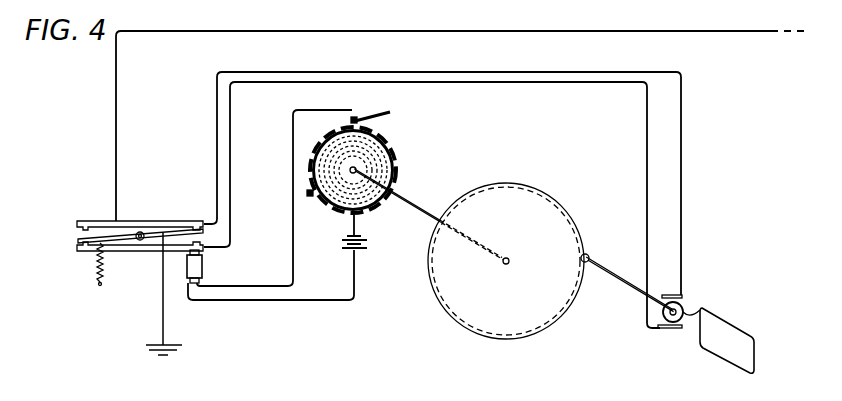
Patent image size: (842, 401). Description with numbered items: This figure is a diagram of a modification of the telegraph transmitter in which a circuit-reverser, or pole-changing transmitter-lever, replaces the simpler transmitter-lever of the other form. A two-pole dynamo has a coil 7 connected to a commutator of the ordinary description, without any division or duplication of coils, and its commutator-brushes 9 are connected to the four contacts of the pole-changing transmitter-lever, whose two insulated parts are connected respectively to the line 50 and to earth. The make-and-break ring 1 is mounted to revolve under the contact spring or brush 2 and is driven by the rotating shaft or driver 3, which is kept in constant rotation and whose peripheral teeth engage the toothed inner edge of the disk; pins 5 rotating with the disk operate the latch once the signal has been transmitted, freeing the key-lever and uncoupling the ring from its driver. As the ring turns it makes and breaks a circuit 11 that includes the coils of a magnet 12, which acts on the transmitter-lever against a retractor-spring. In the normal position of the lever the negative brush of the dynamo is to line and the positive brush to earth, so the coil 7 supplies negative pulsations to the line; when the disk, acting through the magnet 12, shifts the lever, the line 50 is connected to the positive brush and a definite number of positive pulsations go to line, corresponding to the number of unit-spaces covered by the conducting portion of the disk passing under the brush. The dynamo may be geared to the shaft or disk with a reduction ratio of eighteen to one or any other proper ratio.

The line 50 is at (460, 116).
The make-and-break ring 1 is at (385, 141).
The contact spring or brush 2 is at (391, 114).
The rotating shaft or driver 3 is at (394, 187).
The pins 5 is at (351, 120).
The generator coil 7 is at (758, 356).
The commutator-brushes 9 is at (692, 295).
The circuit 11 is at (354, 281).
The magnet 12 is at (202, 268).